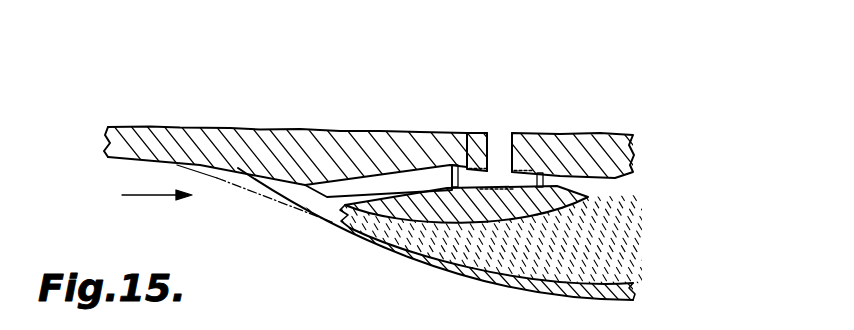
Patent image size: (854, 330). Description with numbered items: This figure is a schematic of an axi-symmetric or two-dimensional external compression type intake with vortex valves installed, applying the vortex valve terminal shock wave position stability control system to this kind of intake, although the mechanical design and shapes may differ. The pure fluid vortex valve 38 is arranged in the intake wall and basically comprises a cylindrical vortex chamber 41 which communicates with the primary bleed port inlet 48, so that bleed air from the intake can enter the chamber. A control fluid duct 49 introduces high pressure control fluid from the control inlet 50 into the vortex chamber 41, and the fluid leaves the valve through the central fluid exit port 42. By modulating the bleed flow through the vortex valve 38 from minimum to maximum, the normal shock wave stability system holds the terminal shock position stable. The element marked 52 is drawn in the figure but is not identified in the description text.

The pure fluid vortex valve 38 is at (500, 188).
The cylindrical vortex chamber 41 is at (468, 134).
The central fluid exit port 42 is at (500, 128).
The primary bleed port inlet 48 is at (330, 197).
The control fluid duct 49 is at (572, 181).
The control inlet 50 is at (546, 181).
The body 52 is at (352, 233).